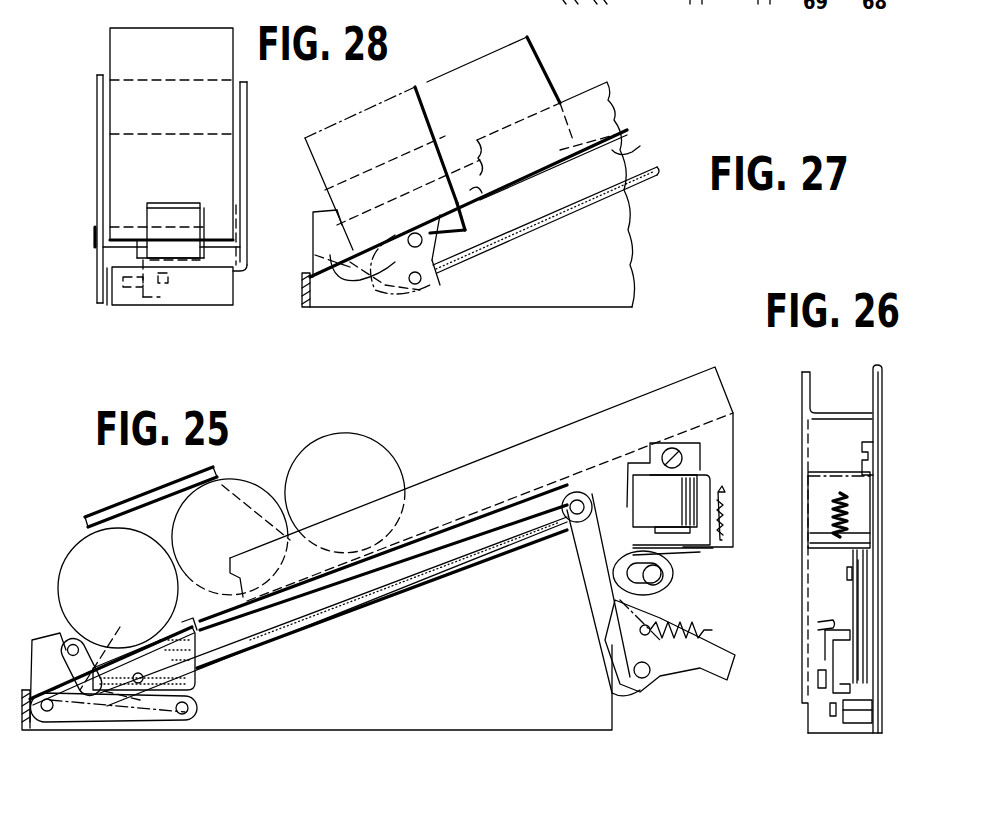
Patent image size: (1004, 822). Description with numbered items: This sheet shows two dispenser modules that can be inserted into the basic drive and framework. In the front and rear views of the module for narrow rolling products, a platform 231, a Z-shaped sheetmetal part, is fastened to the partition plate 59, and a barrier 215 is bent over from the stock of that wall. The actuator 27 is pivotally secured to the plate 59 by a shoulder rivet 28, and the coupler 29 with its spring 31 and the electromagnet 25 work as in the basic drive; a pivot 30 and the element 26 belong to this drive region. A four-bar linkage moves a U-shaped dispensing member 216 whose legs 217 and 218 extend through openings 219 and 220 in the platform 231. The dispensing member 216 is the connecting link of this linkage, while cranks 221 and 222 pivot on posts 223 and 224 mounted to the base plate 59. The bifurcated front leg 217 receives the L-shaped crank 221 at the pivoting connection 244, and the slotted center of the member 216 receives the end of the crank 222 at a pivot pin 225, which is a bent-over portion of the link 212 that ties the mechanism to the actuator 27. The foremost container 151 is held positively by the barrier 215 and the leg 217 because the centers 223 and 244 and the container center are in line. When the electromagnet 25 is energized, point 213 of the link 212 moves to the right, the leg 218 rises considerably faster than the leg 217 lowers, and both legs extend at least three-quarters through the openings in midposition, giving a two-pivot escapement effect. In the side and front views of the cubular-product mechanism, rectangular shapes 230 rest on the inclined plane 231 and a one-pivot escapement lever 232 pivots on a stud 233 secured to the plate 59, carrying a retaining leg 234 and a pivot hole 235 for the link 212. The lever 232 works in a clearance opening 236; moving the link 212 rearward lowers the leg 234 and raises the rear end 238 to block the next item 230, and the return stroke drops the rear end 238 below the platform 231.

In FIG. 25, the electromagnet 25 is at (670, 495).
In FIG. 26, the electromagnet 25 is at (839, 510).
In FIG. 25, the solenoid plunger 26 is at (690, 556).
In FIG. 25, the actuator 27 is at (578, 580).
In FIG. 26, the actuator 27 is at (870, 606).
In FIG. 25, the shoulder rivet 28 is at (672, 578).
In FIG. 26, the shoulder rivet 28 is at (849, 572).
In FIG. 25, the coupler 29 is at (683, 613).
In FIG. 26, the coupler 29 is at (857, 632).
In FIG. 25, the pivot pin 30 is at (644, 683).
In FIG. 25, the spring 31 is at (720, 631).
In FIG. 28, the partition plate 59 is at (95, 152).
In FIG. 27, the partition plate 59 is at (556, 296).
In FIG. 25, the partition plate 59 is at (511, 659).
In FIG. 26, the partition plate 59 is at (883, 532).
In FIG. 25, the container 151 is at (136, 564).
In FIG. 28, the connecting link 212 is at (133, 298).
In FIG. 27, the connecting link 212 is at (562, 215).
In FIG. 25, the connecting link 212 is at (370, 598).
In FIG. 25, the point of connecting link 213 is at (588, 503).
In FIG. 25, the barrier 215 is at (148, 494).
In FIG. 25, the dispensing member 216 is at (211, 689).
In FIG. 26, the dispensing member 216 is at (811, 666).
In FIG. 25, the leg 217 is at (62, 640).
In FIG. 25, the leg 218 is at (160, 650).
In FIG. 25, the opening 219 is at (40, 640).
In FIG. 26, the opening 219 is at (818, 680).
In FIG. 25, the opening 220 is at (190, 626).
In FIG. 26, the opening 220 is at (822, 622).
In FIG. 25, the crank 221 is at (78, 718).
In FIG. 25, the crank 222 is at (153, 712).
In FIG. 26, the crank 222 is at (833, 718).
In FIG. 25, the post 223 is at (46, 714).
In FIG. 25, the post 224 is at (186, 716).
In FIG. 26, the post 224 is at (860, 726).
In FIG. 25, the pivot pin 225 is at (135, 672).
In FIG. 28, the rectangular or cubular shape 230 is at (191, 174).
In FIG. 27, the rectangular or cubular shape 230 is at (397, 154).
In FIG. 28, the platform 231 is at (250, 118).
In FIG. 27, the platform 231 is at (640, 148).
In FIG. 25, the platform 231 is at (515, 442).
In FIG. 26, the platform 231 is at (838, 410).
In FIG. 27, the escapement lever 232 is at (345, 300).
In FIG. 27, the stud 233 is at (408, 222).
In FIG. 28, the retaining leg 234 is at (172, 203).
In FIG. 27, the retaining leg 234 is at (333, 208).
In FIG. 28, the pivot hole 235 is at (160, 298).
In FIG. 27, the pivot hole 235 is at (420, 280).
In FIG. 28, the clearance opening 236 is at (212, 253).
In FIG. 27, the clearance opening 236 is at (324, 264).
In FIG. 27, the rear end 238 is at (440, 200).
In FIG. 25, the pivoting connection 244 is at (82, 640).